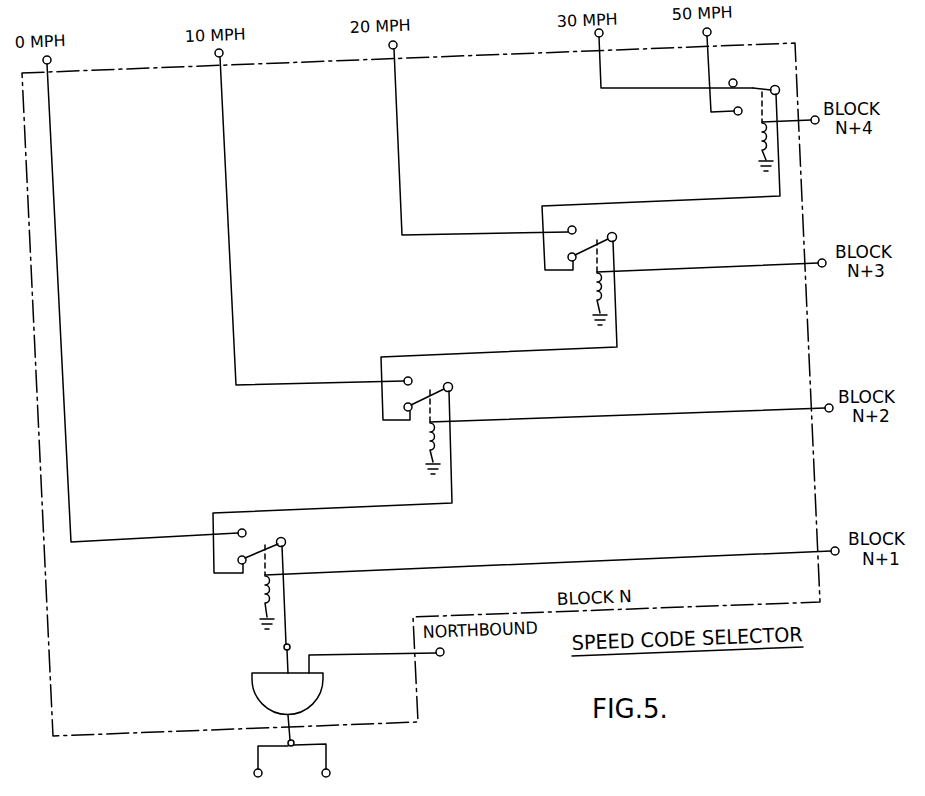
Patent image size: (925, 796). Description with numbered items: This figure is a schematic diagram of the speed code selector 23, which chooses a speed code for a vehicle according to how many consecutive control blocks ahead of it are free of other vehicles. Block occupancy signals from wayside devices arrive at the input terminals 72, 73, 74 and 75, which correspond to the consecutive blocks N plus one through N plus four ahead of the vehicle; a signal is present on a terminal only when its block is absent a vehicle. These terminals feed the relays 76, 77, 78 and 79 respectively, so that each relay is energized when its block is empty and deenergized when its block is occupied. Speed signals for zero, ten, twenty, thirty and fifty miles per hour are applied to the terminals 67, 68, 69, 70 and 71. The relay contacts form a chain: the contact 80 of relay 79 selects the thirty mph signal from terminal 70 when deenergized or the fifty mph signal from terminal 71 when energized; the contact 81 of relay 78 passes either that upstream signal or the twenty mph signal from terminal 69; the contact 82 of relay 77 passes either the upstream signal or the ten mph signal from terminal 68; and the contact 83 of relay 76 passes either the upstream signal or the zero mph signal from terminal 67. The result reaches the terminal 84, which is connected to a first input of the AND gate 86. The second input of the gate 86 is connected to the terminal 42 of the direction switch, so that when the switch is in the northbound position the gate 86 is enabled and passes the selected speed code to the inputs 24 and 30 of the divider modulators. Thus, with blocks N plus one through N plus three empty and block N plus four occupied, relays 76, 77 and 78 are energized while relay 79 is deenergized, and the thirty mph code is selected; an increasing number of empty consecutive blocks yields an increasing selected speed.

The speed code selector 23 is at (113, 736).
The input of divider modulator 24 is at (330, 772).
The input of divider modulator 30 is at (254, 773).
The terminal of switch 42 is at (441, 656).
The terminal 67 is at (52, 60).
The terminal 68 is at (224, 53).
The terminal 69 is at (398, 45).
The input terminal 70 is at (604, 33).
The terminal 71 is at (712, 32).
The input terminal 72 is at (835, 555).
The input terminal 73 is at (829, 412).
The input terminal 74 is at (822, 267).
The input terminal 75 is at (815, 124).
The relay 76 is at (262, 593).
The relay 77 is at (427, 446).
The relay 78 is at (591, 290).
The relay 79 is at (758, 135).
The contact 80 is at (755, 87).
The contact 81 is at (589, 236).
The contact 82 is at (437, 386).
The contact 83 is at (268, 547).
The terminal 84 is at (291, 645).
The AND gate 86 is at (324, 690).